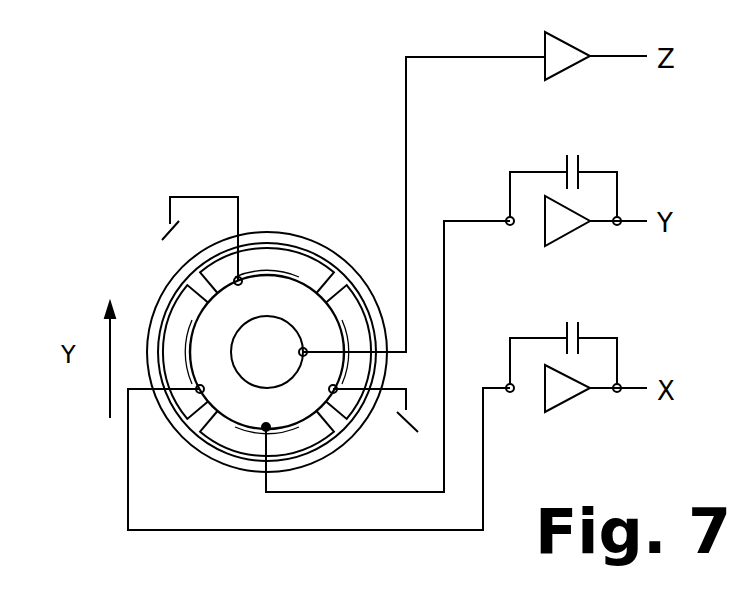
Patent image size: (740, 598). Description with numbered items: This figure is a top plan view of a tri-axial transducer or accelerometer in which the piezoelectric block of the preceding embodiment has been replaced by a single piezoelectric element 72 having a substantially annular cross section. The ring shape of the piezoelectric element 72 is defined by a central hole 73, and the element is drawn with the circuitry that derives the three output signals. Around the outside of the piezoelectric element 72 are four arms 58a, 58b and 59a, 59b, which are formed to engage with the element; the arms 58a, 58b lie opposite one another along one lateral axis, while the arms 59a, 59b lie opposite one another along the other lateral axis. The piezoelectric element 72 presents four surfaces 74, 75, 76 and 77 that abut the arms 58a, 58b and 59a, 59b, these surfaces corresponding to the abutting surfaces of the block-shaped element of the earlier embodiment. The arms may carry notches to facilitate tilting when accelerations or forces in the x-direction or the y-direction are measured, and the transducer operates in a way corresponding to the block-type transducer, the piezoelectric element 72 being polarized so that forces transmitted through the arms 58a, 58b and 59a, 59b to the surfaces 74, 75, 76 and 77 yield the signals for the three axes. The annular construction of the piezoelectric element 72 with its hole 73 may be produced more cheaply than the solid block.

The arm 58a is at (358, 332).
The arm 58b is at (182, 320).
The arm 59a is at (258, 266).
The arm 59b is at (304, 439).
The piezoelectric element 72 is at (311, 309).
The hole 73 is at (262, 349).
The surface 74 is at (348, 368).
The surface 75 is at (189, 361).
The surface 76 is at (296, 274).
The surface 77 is at (256, 434).